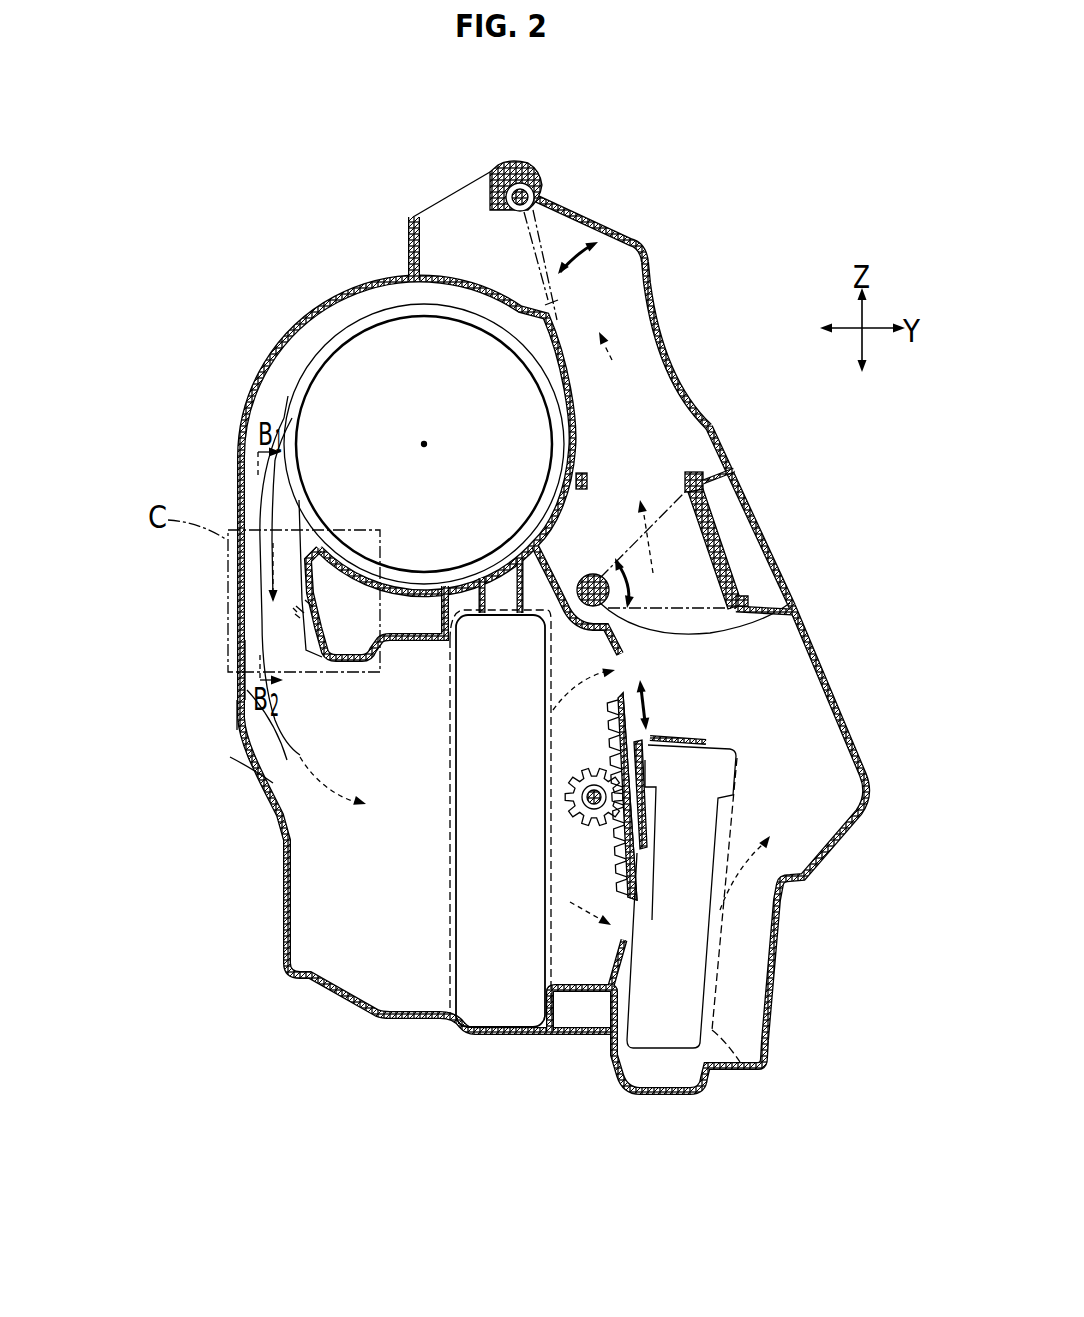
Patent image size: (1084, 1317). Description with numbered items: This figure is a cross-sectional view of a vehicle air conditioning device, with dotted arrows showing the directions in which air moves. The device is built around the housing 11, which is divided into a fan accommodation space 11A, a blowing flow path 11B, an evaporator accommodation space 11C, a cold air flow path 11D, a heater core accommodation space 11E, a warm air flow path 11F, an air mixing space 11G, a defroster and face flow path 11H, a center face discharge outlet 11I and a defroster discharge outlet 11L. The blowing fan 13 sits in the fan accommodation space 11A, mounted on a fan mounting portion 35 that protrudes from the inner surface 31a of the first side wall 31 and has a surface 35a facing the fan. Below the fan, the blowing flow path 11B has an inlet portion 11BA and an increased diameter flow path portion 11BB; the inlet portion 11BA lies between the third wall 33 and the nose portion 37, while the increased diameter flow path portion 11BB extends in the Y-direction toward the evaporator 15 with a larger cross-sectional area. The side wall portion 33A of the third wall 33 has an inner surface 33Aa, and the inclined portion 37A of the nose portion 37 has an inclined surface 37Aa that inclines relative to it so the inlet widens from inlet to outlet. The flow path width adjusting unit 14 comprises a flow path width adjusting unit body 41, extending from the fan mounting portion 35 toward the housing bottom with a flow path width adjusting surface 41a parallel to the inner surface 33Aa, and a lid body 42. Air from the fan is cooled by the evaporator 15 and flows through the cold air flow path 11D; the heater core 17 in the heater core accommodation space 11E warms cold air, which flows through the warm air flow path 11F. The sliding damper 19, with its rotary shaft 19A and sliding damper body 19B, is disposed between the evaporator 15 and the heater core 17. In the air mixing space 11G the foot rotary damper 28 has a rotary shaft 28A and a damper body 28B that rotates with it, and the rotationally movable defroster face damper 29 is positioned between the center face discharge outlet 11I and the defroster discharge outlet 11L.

The housing 11 is at (262, 365).
The fan accommodation space 11A is at (294, 350).
The blowing flow path 11B is at (140, 660).
The inlet portion 11BA is at (297, 643).
The increased diameter flow path portion 11BB is at (292, 745).
The evaporator accommodation space 11C is at (563, 980).
The cold air flow path 11D is at (590, 940).
The heater core accommodation space 11E is at (740, 1062).
The warm air flow path 11F is at (787, 850).
The air mixing space 11G is at (670, 557).
The defroster and face flow path 11H is at (640, 367).
The center face discharge outlet 11I is at (617, 218).
The defroster discharge outlet 11L is at (452, 210).
The blowing fan 13 is at (388, 368).
The flow path width adjusting unit 14 is at (217, 720).
The evaporator 15 is at (493, 997).
The heater core 17 is at (665, 990).
The sliding damper 19 is at (483, 919).
The rotary shaft 19A is at (575, 798).
The sliding damper body 19B is at (617, 862).
The foot rotary damper 28 is at (744, 562).
The rotary shaft 28A is at (748, 607).
The damper body 28B is at (722, 546).
The defroster face damper 29 is at (541, 235).
The first side wall 31 is at (263, 497).
The inner surface 31a is at (273, 517).
The third wall 33 is at (262, 793).
The side wall portion 33A is at (304, 613).
The inner surface 33Aa is at (313, 607).
The fan mounting portion 35 is at (286, 394).
The surface 35a is at (291, 418).
The nose portion 37 is at (353, 665).
The inclined portion 37A is at (313, 592).
The inclined surface 37Aa is at (297, 612).
The flow path width adjusting unit body 41 is at (296, 728).
The flow path width adjusting surface 41a is at (300, 618).
The lid body 42 is at (300, 758).